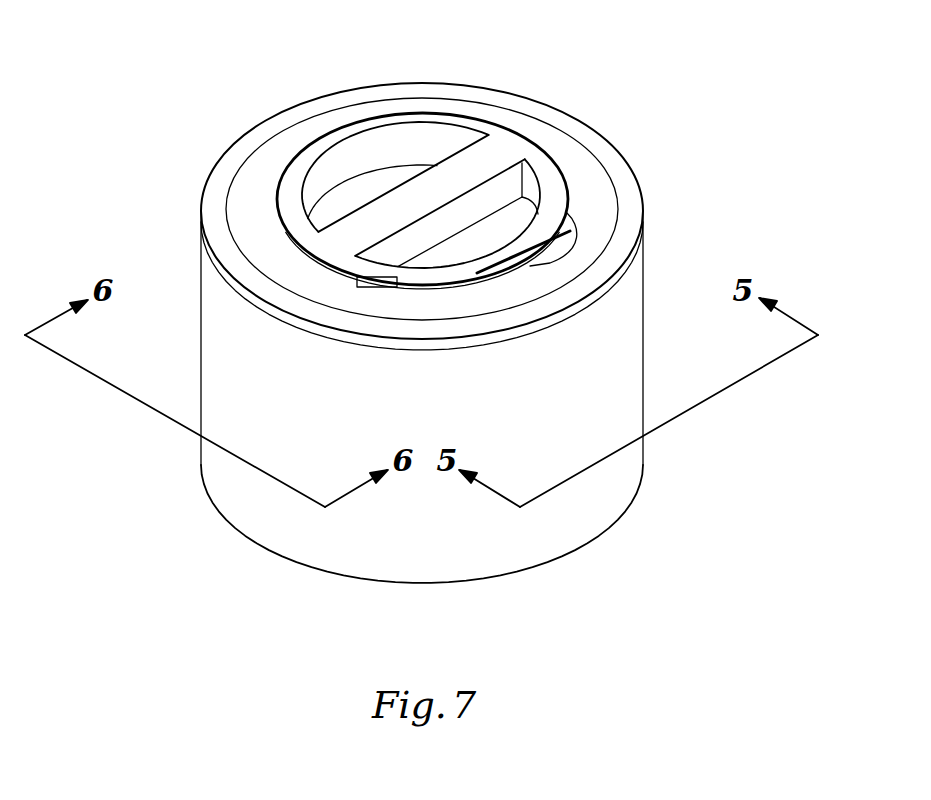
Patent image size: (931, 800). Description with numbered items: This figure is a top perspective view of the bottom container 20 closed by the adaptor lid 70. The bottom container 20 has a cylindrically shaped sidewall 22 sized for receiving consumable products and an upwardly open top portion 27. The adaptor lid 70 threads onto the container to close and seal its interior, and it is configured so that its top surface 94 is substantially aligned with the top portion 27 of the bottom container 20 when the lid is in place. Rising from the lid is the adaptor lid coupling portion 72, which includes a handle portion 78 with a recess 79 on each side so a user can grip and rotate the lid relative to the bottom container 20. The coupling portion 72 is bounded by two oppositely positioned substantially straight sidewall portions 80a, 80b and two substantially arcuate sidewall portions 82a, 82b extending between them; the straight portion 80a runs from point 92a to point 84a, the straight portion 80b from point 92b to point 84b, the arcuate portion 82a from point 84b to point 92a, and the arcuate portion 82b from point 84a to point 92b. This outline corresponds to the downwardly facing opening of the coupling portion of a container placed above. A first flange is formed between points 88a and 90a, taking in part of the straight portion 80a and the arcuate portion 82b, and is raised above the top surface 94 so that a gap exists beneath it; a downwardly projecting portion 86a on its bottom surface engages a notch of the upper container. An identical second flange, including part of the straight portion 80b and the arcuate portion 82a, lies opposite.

The bottom container 20 is at (668, 455).
The sidewall 22 is at (240, 503).
The upwardly open top portion 27 is at (260, 303).
The adaptor lid 70 is at (526, 72).
The adaptor lid coupling portion 72 is at (552, 125).
The handle portion 78 is at (450, 180).
The recess 79 is at (388, 183).
The substantially straight sidewall portion 80a is at (535, 272).
The substantially straight sidewall portion 80b is at (330, 142).
The substantially arcuate sidewall portion 82a is at (570, 222).
The substantially arcuate sidewall portion 82b is at (272, 228).
The point 84a is at (473, 285).
The point 84b is at (324, 128).
The downwardly projecting portion 86a is at (398, 288).
The point 88a is at (516, 262).
The point 90a is at (357, 279).
The point 92a is at (570, 258).
The point 92b is at (273, 118).
The top surface 94 is at (253, 198).